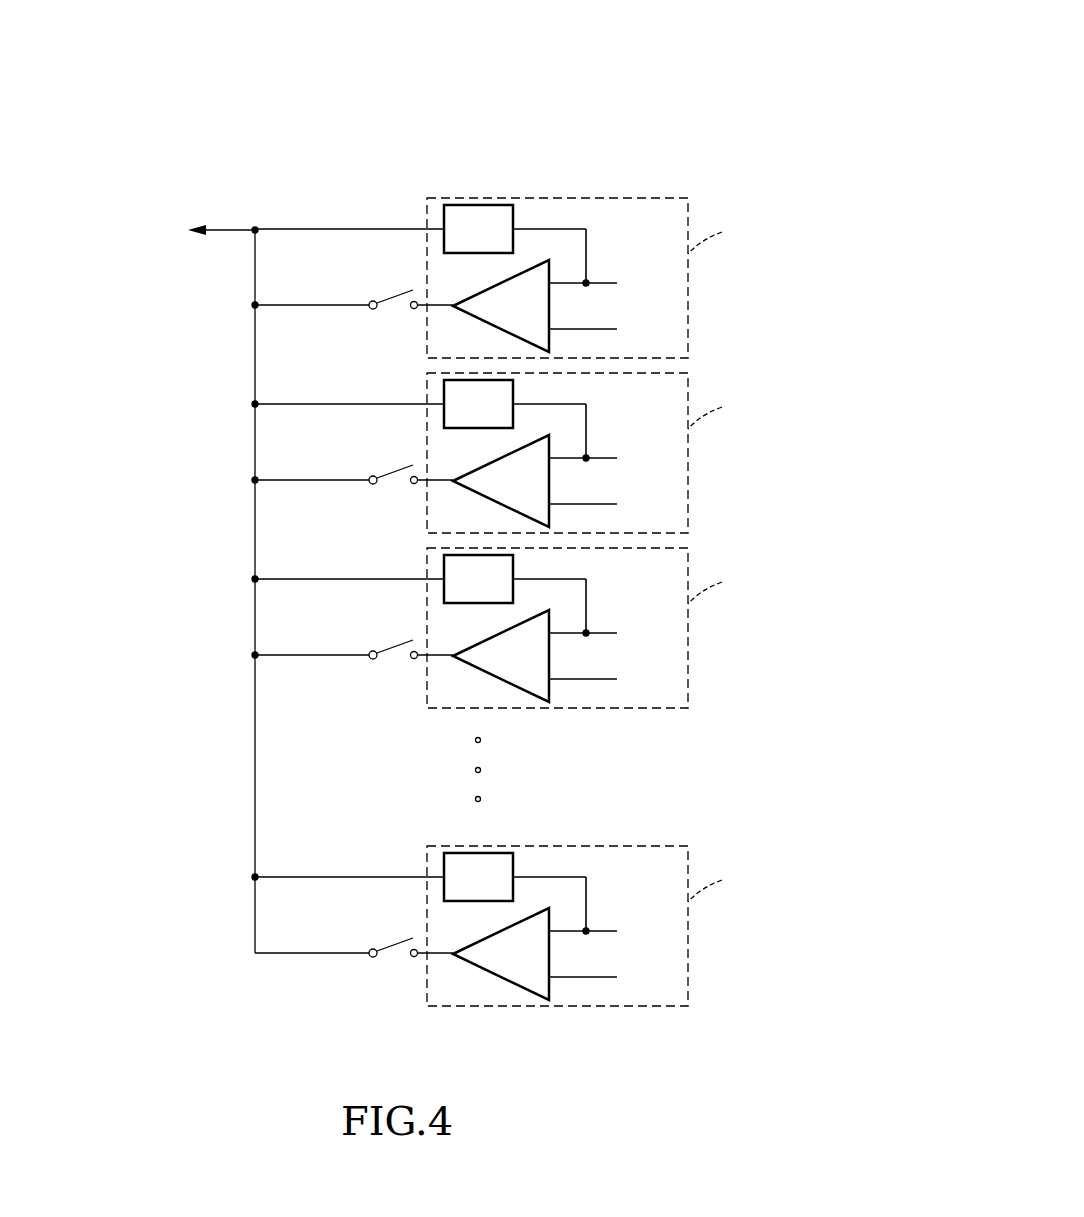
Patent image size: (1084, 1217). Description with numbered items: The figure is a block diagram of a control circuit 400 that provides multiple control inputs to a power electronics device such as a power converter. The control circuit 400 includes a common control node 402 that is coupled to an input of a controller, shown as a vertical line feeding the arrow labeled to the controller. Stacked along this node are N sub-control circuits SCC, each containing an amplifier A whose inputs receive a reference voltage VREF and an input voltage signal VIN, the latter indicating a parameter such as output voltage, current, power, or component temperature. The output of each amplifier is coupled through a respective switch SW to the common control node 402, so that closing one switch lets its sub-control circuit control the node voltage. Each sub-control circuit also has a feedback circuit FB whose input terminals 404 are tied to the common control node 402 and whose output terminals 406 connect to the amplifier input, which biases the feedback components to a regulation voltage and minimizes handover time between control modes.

The control circuit 400 is at (646, 46).
The common control node 402 is at (254, 226).
The input terminals of feedback circuits 404 is at (353, 227).
The output terminals of feedback circuits 406 is at (537, 226).